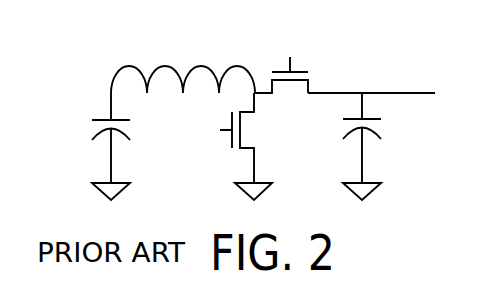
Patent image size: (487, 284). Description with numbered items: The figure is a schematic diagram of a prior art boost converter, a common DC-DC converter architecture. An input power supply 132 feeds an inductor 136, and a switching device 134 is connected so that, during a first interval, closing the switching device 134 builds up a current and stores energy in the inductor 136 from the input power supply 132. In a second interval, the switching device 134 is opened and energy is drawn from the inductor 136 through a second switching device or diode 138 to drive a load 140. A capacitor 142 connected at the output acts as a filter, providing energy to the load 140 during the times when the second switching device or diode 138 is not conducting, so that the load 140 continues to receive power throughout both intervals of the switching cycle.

The input power supply 132 is at (111, 93).
The switching device 134 is at (230, 147).
The inductor 136 is at (172, 65).
The second switching device or diode 138 is at (280, 58).
The load 140 is at (371, 83).
The capacitor 142 is at (343, 137).